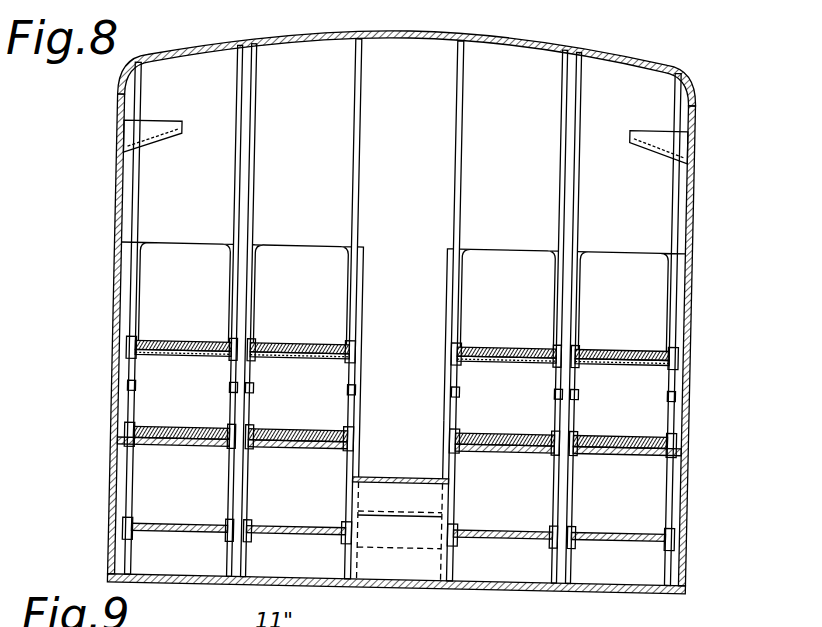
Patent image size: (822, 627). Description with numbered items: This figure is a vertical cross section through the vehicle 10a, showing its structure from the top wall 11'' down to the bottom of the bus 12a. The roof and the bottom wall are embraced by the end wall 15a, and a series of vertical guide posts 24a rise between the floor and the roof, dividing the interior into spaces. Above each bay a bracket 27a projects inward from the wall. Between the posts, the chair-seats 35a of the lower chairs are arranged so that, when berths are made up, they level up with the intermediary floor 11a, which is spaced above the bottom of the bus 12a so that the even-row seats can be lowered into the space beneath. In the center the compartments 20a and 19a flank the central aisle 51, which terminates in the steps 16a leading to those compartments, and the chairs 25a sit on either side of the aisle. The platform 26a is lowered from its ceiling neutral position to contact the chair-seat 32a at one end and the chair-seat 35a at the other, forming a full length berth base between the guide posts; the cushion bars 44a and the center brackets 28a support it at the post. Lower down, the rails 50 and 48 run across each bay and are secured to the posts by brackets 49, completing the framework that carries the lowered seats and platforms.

The vehicle 10a is at (702, 244).
The top wall 11'' is at (408, 59).
The bottom of the bus 12a is at (600, 578).
The end wall 15a is at (163, 183).
The guide post 24a is at (355, 171).
The bracket 27a is at (172, 135).
The chair-seat 35a is at (285, 263).
The compartment 20a is at (368, 263).
The compartment 19a is at (453, 270).
The chair 25a is at (458, 417).
The upper cushion bar 44a is at (273, 341).
The platform 26a is at (219, 358).
The center bracket 28a is at (459, 344).
The chair-seat 32a is at (281, 429).
The intermediary floor 11a is at (252, 446).
The rail 50 is at (219, 447).
The central aisle 51 is at (411, 465).
The steps 16a is at (431, 537).
The lower rail 48 is at (200, 518).
The rail bracket 49 is at (148, 539).